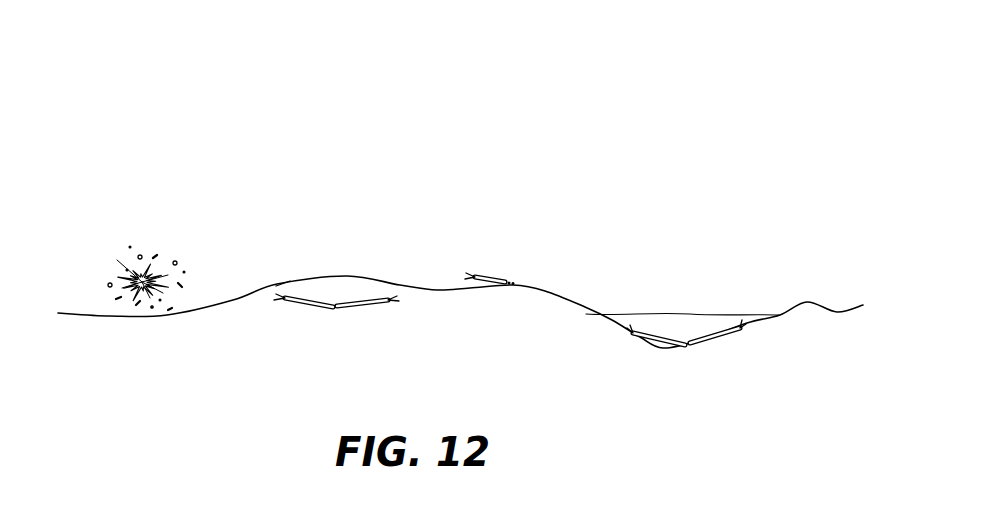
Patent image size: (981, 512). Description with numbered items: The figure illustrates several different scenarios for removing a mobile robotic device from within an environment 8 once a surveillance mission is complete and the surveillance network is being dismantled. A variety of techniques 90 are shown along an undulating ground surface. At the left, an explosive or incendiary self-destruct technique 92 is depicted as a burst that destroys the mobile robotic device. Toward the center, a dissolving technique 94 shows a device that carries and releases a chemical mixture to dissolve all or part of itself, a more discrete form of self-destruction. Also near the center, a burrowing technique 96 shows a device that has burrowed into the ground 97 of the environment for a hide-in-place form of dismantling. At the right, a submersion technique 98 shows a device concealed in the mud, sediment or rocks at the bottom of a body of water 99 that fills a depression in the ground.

The environment 8 is at (466, 350).
The techniques for removing mobile robotic devices 90 is at (552, 98).
The explosive or incendiary self-destruct technique 92 is at (108, 243).
The dissolving technique 94 is at (503, 257).
The burrowing technique 96 is at (338, 265).
The ground 97 is at (283, 283).
The submersion technique 98 is at (739, 306).
The body of water 99 is at (697, 310).